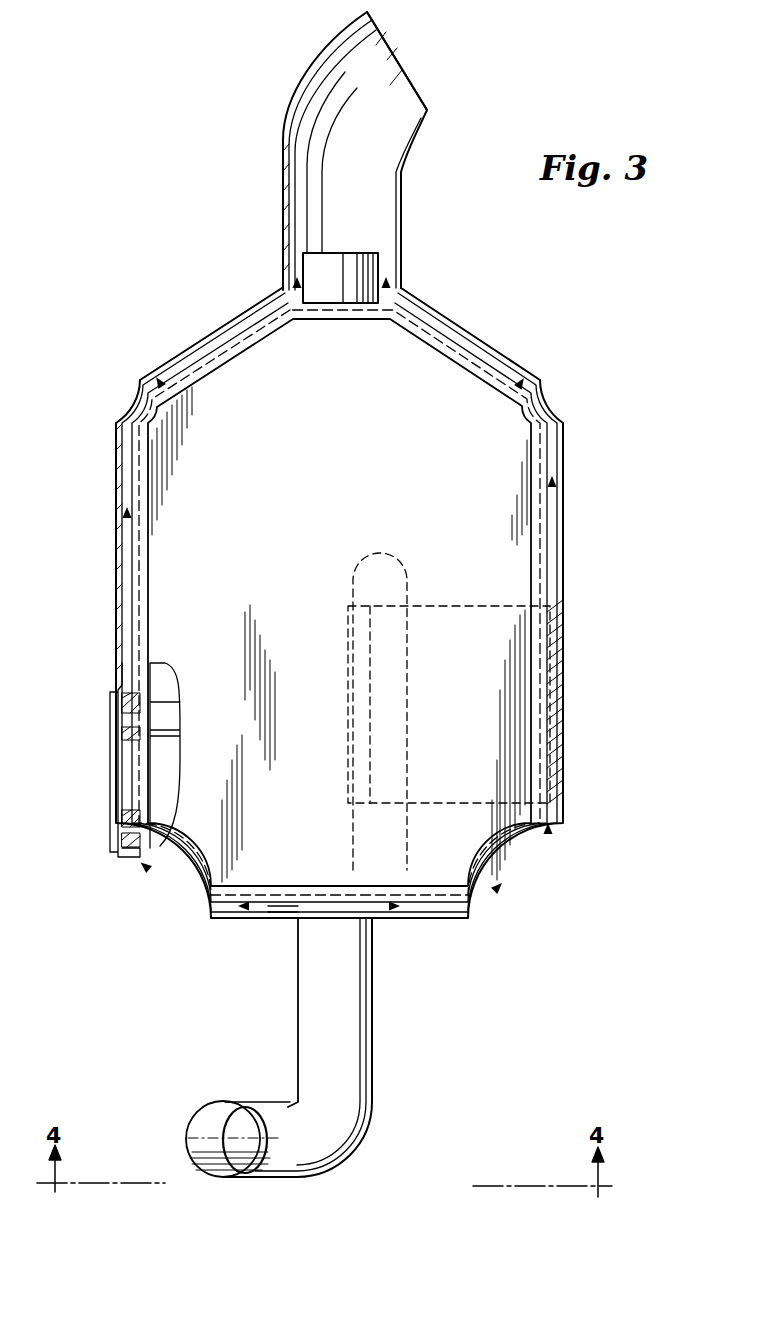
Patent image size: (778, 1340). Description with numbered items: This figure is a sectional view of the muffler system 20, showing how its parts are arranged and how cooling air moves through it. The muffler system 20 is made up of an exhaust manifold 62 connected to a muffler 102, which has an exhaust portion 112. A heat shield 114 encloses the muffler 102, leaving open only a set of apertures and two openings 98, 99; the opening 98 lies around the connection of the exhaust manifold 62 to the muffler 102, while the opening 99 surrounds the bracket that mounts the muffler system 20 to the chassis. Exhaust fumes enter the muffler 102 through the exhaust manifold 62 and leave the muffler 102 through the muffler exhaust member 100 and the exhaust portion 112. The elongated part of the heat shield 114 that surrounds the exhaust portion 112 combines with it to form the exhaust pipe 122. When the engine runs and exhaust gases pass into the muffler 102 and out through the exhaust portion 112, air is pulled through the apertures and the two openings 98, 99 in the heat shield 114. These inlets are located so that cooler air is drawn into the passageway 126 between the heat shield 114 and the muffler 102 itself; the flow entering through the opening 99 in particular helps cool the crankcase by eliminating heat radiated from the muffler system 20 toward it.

The muffler system 20 is at (98, 550).
The exhaust manifold 62 is at (298, 1025).
The opening 98 is at (290, 916).
The opening 99 is at (405, 565).
The muffler exhaust member 100 is at (300, 95).
The muffler 102 is at (532, 442).
The exhaust portion 112 is at (357, 268).
The heat shield 114 is at (562, 505).
The exhaust pipe 122 is at (421, 72).
The passageway 126 is at (230, 338).